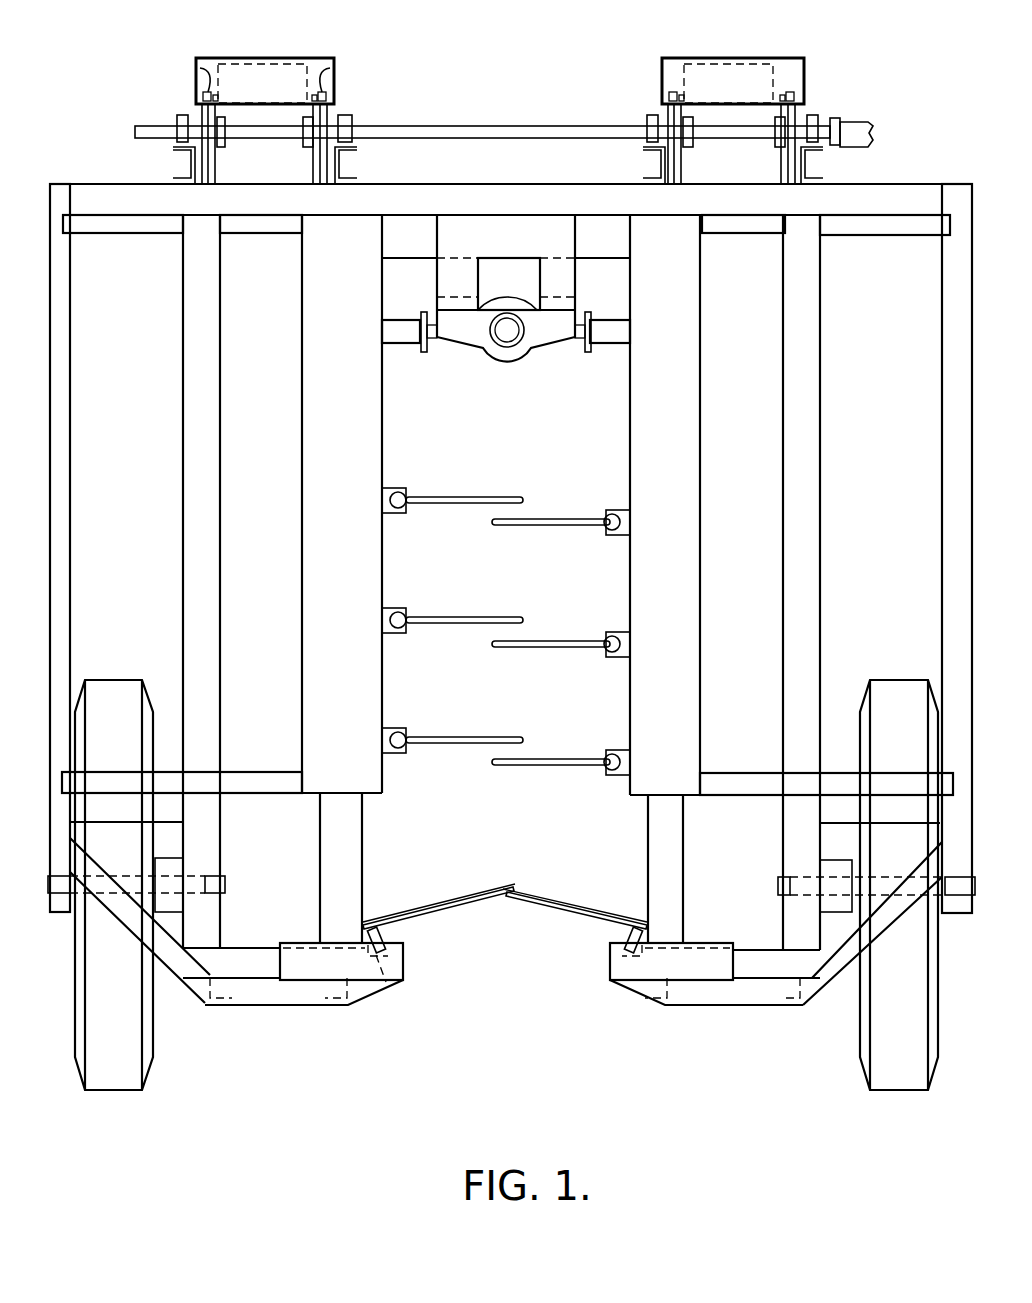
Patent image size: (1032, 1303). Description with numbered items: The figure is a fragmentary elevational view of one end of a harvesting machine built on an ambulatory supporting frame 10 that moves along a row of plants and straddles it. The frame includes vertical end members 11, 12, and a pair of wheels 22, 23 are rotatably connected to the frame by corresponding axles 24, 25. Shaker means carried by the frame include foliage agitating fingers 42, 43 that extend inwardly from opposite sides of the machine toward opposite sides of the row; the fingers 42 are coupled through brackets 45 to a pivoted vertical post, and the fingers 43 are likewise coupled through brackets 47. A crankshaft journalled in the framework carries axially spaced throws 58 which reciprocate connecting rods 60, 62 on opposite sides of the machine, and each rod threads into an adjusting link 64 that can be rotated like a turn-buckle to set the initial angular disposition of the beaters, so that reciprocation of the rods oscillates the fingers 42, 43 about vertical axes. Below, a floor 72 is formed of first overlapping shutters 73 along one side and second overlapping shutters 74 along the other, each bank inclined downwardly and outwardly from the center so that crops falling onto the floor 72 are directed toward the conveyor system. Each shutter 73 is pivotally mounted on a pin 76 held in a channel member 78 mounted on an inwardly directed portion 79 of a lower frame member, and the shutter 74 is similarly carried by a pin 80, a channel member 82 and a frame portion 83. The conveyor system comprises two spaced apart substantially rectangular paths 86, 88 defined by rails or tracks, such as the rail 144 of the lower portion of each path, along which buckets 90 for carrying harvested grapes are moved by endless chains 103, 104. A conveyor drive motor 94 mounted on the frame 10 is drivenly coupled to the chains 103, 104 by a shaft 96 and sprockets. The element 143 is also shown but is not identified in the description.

The ambulatory supporting frame 10 is at (107, 182).
The vertical end member 11 is at (956, 196).
The vertical end member 12 is at (60, 190).
The wheel 22 is at (898, 1080).
The wheel 23 is at (115, 1080).
The axle 24 is at (778, 886).
The axle 25 is at (228, 880).
The fingers 42 is at (556, 527).
The fingers 43 is at (461, 504).
The bracket 45 is at (617, 512).
The bracket 47 is at (392, 490).
The throw 58 is at (520, 362).
The connecting rod 60 is at (580, 337).
The connecting rod 62 is at (432, 337).
The adjusting link 64 is at (403, 335).
The floor 72 is at (403, 910).
The first overlapping shutters 73 is at (455, 908).
The second overlapping shutters 74 is at (548, 907).
The pin 76 is at (386, 934).
The channel member 78 is at (390, 986).
The inwardly directed portion 79 is at (360, 968).
The pin 80 is at (625, 934).
The channel member 82 is at (610, 967).
The frame portion 83 is at (635, 980).
The path 86 is at (226, 56).
The path 88 is at (695, 54).
The bucket 90 is at (277, 82).
The conveyor drive motor 94 is at (858, 121).
The shaft 96 is at (487, 126).
The chain 103 is at (200, 70).
The chain 104 is at (330, 70).
The skid bracket 143 is at (212, 1005).
The rail 144 is at (345, 1005).